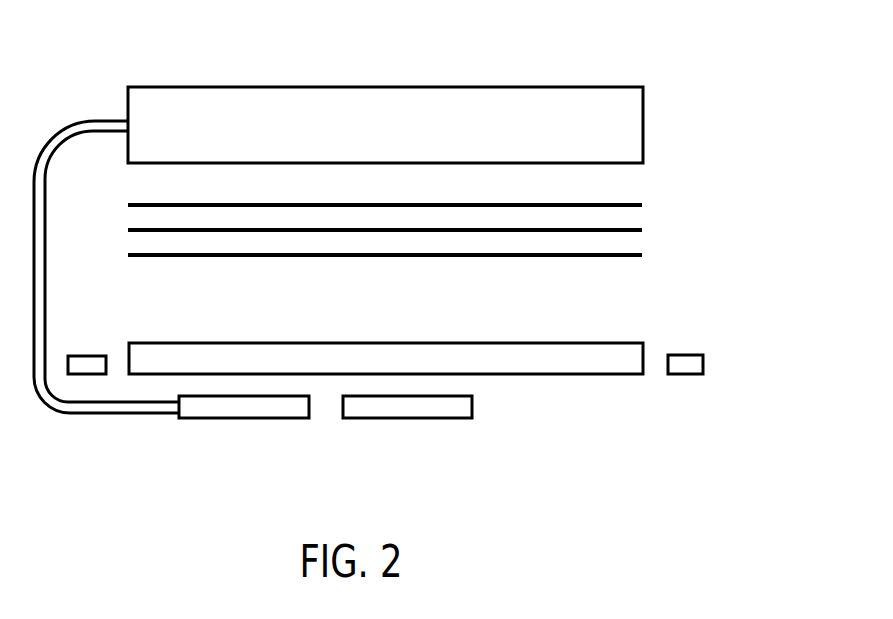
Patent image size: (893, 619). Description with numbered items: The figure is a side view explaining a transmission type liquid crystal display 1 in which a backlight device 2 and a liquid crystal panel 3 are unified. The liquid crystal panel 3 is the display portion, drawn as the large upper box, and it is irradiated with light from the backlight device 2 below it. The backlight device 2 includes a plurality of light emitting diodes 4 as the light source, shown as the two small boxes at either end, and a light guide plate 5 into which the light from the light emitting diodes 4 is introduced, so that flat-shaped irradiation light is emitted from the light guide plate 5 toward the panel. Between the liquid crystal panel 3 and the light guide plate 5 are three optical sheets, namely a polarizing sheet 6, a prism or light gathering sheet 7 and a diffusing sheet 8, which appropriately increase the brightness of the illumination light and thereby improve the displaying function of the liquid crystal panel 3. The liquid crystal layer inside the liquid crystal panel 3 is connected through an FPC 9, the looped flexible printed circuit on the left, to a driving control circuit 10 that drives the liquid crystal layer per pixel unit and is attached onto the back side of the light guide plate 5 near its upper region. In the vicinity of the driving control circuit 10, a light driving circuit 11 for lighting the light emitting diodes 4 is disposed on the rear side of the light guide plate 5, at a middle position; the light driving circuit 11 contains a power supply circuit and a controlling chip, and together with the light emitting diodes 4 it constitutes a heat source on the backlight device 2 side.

The liquid crystal display 1 is at (662, 65).
The backlight device 2 is at (605, 332).
The liquid crystal panel 3 is at (643, 120).
The light emitting diode 4 is at (86, 355).
The light guide plate 5 is at (569, 358).
The polarizing sheet 6 is at (620, 203).
The prism sheet 7 is at (620, 227).
The diffusing sheet 8 is at (620, 254).
The FPC 9 is at (125, 412).
The driving control circuit 10 is at (247, 410).
The light driving circuit 11 is at (407, 410).